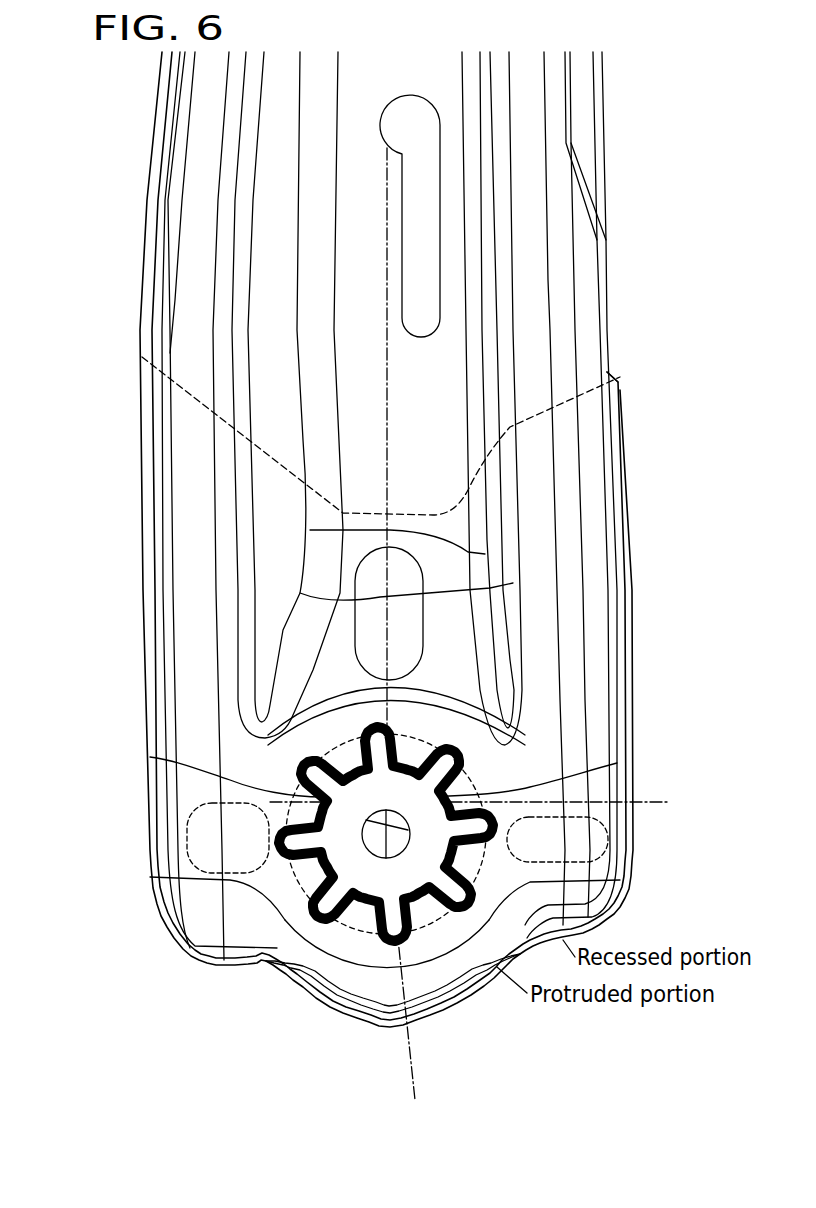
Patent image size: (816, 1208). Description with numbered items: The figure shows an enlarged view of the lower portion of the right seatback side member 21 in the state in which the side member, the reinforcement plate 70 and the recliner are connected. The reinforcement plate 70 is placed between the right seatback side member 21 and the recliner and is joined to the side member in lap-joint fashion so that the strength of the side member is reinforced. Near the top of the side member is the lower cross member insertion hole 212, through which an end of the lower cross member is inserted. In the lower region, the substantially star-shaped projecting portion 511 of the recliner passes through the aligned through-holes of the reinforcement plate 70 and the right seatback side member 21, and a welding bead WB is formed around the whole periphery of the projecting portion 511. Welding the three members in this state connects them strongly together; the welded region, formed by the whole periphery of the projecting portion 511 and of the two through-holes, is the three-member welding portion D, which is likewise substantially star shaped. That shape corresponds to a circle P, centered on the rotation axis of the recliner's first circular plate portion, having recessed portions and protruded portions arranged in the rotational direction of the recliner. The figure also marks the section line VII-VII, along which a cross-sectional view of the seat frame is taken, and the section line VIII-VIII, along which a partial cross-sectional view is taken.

The right seatback side member 21 is at (595, 112).
The lower cross member insertion hole 212 is at (420, 192).
The reinforcement plate 70 is at (190, 458).
The projecting portion 511 is at (150, 757).
The welding bead WB is at (617, 763).
The three-member welding portion D is at (481, 801).
The circle P is at (467, 1000).
The line VII- VII is at (313, 878).
The line VIII- VIII is at (420, 147).